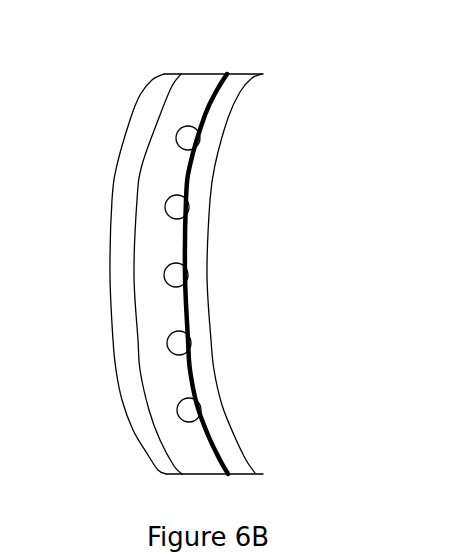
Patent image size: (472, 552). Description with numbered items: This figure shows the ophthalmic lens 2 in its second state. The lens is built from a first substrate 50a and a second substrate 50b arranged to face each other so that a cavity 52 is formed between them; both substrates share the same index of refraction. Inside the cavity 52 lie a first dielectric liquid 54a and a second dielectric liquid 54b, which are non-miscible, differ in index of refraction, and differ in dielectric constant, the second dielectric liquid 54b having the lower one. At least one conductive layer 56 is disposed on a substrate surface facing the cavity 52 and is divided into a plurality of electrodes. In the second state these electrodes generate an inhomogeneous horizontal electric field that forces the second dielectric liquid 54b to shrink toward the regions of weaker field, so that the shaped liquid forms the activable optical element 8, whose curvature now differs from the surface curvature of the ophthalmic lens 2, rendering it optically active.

The ophthalmic lens 2 is at (137, 103).
The first substrate 50a is at (157, 85).
The second substrate 50b is at (233, 85).
The cavity 52 is at (162, 170).
The activable optical element 8 is at (186, 206).
The conductive layer 56 is at (187, 300).
The first dielectric liquid 54a is at (162, 373).
The second dielectric liquid 54b is at (198, 412).